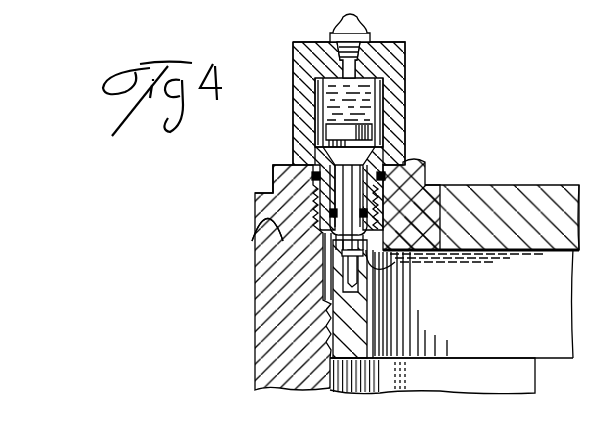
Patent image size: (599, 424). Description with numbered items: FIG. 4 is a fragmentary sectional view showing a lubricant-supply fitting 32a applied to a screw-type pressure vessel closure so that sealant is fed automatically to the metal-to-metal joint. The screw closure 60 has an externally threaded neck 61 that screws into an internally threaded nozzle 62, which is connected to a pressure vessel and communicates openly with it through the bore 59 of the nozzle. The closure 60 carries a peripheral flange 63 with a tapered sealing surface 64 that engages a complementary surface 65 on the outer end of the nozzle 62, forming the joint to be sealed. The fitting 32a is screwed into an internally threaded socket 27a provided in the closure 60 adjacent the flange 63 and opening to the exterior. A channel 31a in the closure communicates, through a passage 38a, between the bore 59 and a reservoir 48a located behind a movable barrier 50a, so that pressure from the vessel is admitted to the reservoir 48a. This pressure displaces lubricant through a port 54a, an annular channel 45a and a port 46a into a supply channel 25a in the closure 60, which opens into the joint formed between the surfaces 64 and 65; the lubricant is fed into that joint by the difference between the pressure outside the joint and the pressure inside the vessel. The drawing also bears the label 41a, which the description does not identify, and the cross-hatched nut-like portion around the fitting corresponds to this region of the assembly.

The port 54a is at (405, 72).
The lubricant-supply fitting 32a is at (405, 86).
The annular channel 45a is at (318, 108).
The movable barrier 50a is at (330, 125).
The reservoir 48a is at (392, 150).
The port 46a is at (386, 170).
The nut 41a is at (413, 172).
The passage 38a is at (408, 208).
The screw closure 60 is at (527, 185).
The peripheral flange 63 is at (258, 190).
The tapered sealing surface 64 is at (328, 262).
The complementary surface 65 is at (253, 240).
The supply channel 25a is at (328, 263).
The nozzle 62 is at (260, 328).
The internally threaded socket 27a is at (362, 262).
The channel 31a is at (380, 295).
The externally threaded neck 61 is at (388, 320).
The bore 59 is at (347, 393).